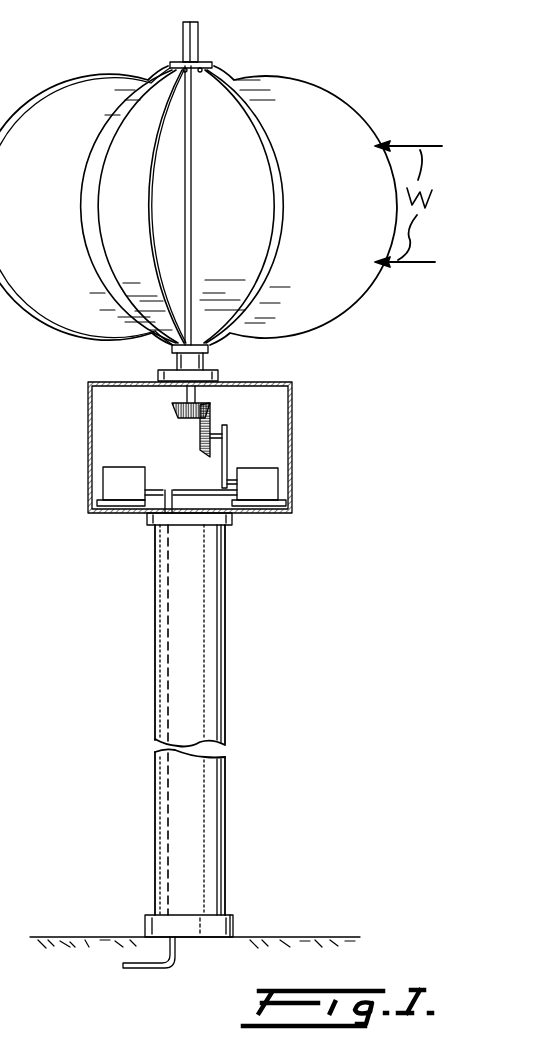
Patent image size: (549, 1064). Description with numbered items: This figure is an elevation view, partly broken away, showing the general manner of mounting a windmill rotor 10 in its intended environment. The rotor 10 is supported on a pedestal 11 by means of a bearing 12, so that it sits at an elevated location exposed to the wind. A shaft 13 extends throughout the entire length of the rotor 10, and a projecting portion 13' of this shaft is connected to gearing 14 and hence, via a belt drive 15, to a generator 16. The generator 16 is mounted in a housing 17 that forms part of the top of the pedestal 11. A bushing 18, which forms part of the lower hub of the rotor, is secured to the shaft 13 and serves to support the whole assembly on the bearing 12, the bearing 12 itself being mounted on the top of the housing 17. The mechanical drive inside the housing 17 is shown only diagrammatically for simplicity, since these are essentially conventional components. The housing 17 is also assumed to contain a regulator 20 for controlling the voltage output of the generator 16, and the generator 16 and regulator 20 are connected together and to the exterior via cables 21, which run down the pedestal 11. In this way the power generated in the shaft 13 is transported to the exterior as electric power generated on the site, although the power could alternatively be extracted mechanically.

The windmill rotor 10 is at (93, 62).
The pedestal 11 is at (207, 676).
The bearing 12 is at (218, 376).
The shaft 13 is at (222, 39).
The projecting portion of the shaft 13' is at (158, 402).
The gearing 14 is at (200, 440).
The belt drive 15 is at (228, 450).
The generator 16 is at (267, 482).
The housing 17 is at (290, 400).
The bushing 18 is at (175, 360).
The regulator 20 is at (120, 483).
The cables 21 is at (161, 508).